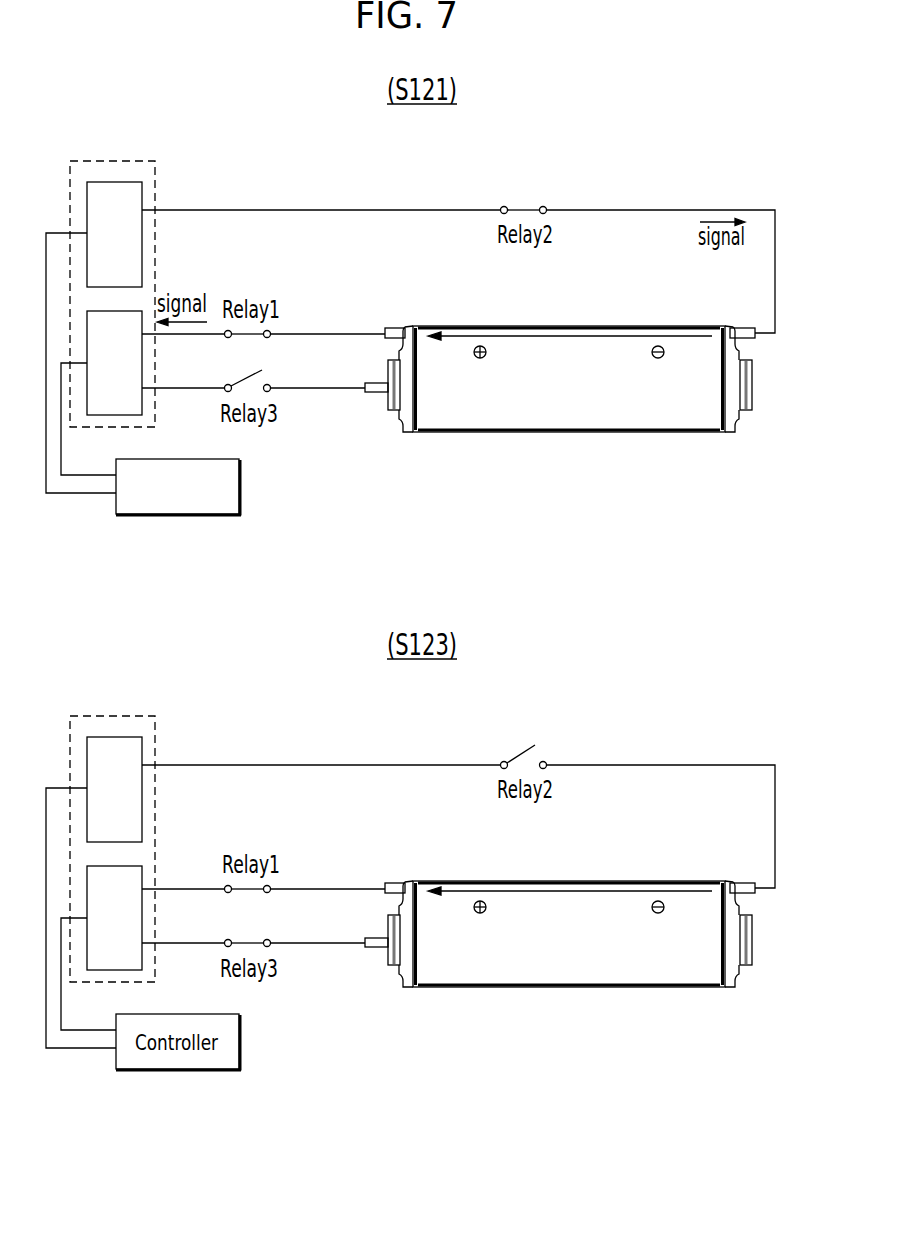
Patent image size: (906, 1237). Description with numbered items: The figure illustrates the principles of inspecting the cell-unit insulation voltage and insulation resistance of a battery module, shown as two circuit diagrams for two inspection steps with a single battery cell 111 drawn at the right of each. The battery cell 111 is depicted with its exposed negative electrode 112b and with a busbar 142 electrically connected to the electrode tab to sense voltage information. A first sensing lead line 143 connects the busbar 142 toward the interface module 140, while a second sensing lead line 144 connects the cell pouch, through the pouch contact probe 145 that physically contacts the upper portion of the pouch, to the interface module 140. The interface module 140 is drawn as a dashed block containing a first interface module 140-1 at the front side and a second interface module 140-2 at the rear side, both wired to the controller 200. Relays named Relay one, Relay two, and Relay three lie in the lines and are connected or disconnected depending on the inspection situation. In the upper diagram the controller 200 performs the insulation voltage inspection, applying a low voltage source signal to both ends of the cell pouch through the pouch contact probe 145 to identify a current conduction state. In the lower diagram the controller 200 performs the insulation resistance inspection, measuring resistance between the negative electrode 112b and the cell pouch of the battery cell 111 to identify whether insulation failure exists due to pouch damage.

The interface module 140 is at (130, 160).
The first interface module 140-1 is at (136, 374).
The second interface module 140-2 is at (136, 246).
The controller 200 is at (240, 488).
The battery cell 111 is at (566, 447).
The negative electrode 112b is at (382, 402).
The busbar 142 is at (372, 393).
The first sensing lead line 143 is at (305, 389).
The second sensing lead line 144 is at (330, 333).
The pouch contact probe 145 is at (395, 327).